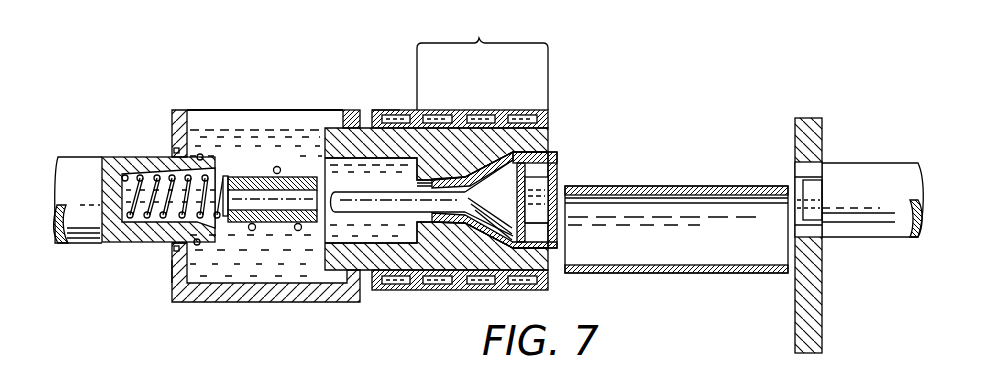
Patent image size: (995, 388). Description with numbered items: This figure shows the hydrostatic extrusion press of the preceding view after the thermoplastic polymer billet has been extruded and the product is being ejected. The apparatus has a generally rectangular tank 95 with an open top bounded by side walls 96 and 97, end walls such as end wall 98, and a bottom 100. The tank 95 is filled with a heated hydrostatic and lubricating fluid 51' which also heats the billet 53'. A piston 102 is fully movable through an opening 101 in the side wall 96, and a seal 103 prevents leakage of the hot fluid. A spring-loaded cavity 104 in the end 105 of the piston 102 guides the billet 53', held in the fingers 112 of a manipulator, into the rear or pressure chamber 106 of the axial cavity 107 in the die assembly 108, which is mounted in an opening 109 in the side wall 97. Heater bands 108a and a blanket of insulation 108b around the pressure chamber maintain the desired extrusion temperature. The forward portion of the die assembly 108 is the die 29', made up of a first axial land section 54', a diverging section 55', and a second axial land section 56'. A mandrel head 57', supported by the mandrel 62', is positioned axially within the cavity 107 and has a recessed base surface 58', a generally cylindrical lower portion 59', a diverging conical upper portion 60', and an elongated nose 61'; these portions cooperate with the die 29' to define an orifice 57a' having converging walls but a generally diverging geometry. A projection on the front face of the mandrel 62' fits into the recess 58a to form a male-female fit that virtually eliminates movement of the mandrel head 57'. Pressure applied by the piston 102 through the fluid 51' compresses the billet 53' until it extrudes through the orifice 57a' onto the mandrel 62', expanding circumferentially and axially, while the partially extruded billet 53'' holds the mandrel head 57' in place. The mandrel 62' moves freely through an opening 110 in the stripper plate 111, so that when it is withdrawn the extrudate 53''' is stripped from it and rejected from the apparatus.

The die 29' is at (482, 62).
The hydrostatic and lubricating fluid 51' is at (293, 159).
The billet 53' is at (270, 184).
The partially extruded billet 53'' is at (464, 249).
The extrudate 53''' is at (676, 211).
The first axial land section 54' is at (423, 94).
The diverging section 55' is at (485, 94).
The second axial land section 56' is at (527, 94).
The mandrel head 57' is at (492, 219).
The orifice 57a' is at (485, 272).
The recessed base surface 58' is at (572, 235).
The recess 58a is at (556, 185).
The cylindrical lower portion 59' is at (566, 186).
The diverging conical upper portion 60' is at (474, 194).
The elongated nose 61' is at (398, 201).
The mandrel 62' is at (872, 200).
The tank 95 is at (256, 193).
The side wall 96 is at (172, 119).
The side wall 97 is at (366, 110).
The end wall 98 is at (283, 110).
The bottom 100 is at (328, 300).
The opening 101 is at (172, 247).
The piston 102 is at (80, 157).
The seal 103 is at (172, 262).
The spring-loaded cavity 104 is at (132, 157).
The end 105 is at (178, 172).
The pressure chamber 106 is at (460, 107).
The axial cavity 107 is at (393, 229).
The die assembly 108 is at (597, 134).
The heater bands 108a is at (400, 290).
The insulation 108b is at (549, 282).
The opening 109 is at (343, 110).
The opening 110 is at (817, 240).
The stripper plate 111 is at (812, 118).
The fingers 112 is at (276, 167).